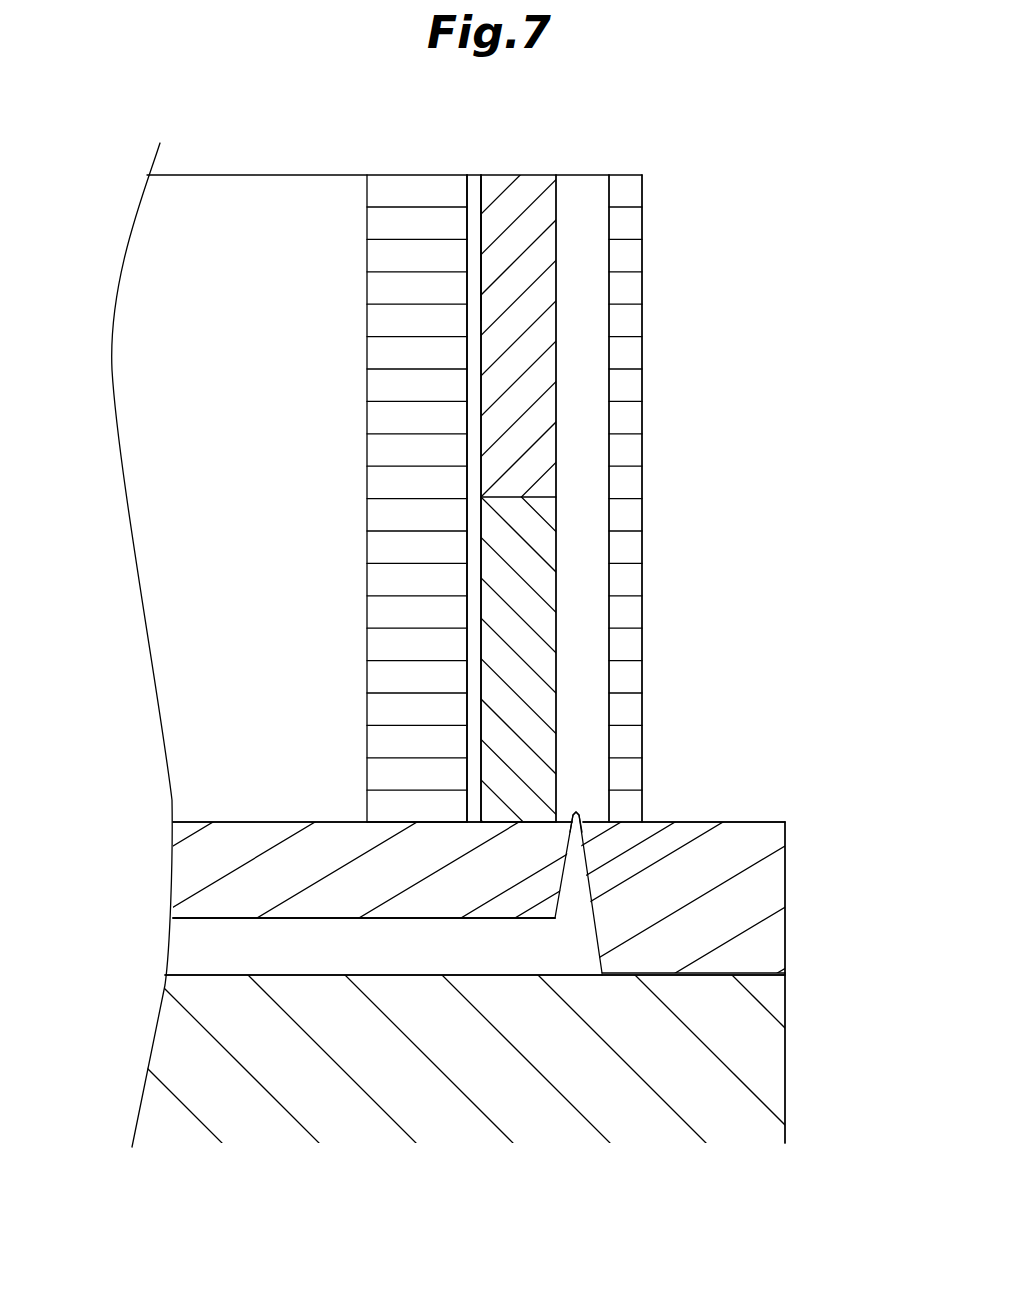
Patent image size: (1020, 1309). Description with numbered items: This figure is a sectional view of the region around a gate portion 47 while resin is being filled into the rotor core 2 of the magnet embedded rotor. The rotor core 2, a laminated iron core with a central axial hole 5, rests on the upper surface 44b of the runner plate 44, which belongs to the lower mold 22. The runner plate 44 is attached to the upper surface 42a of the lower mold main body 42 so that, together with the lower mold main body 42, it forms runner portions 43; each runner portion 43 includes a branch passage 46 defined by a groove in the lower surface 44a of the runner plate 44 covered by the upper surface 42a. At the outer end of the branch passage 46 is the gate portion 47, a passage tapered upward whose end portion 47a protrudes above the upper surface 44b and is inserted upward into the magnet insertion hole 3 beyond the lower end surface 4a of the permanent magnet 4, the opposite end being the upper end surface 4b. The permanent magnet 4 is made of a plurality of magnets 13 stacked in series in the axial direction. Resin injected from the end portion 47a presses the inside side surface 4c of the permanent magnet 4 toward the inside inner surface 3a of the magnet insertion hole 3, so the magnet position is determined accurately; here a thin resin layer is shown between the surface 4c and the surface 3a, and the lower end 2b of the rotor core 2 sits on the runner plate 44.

The rotor core 2 is at (652, 222).
The lower end of cell 2b is at (391, 823).
The magnet insertion hole 3 is at (604, 210).
The inside inner surface 3a is at (482, 248).
The permanent magnet 4 is at (566, 494).
The end surface 4a is at (503, 823).
The end surface 4b is at (545, 175).
The inside side surface 4c is at (480, 194).
The axial hole 5 is at (366, 199).
The magnet 13 is at (609, 704).
The lower mold 22 is at (779, 801).
The lower mold main body 42 is at (787, 1043).
The upper surface 42a is at (748, 974).
The runner portion 43 is at (296, 953).
The runner plate 44 is at (794, 868).
The lower surface 44a is at (718, 975).
The upper surface 44b is at (229, 822).
The branch passage 46 is at (233, 919).
The gate portion 47 is at (594, 895).
The end portion 47a is at (575, 814).